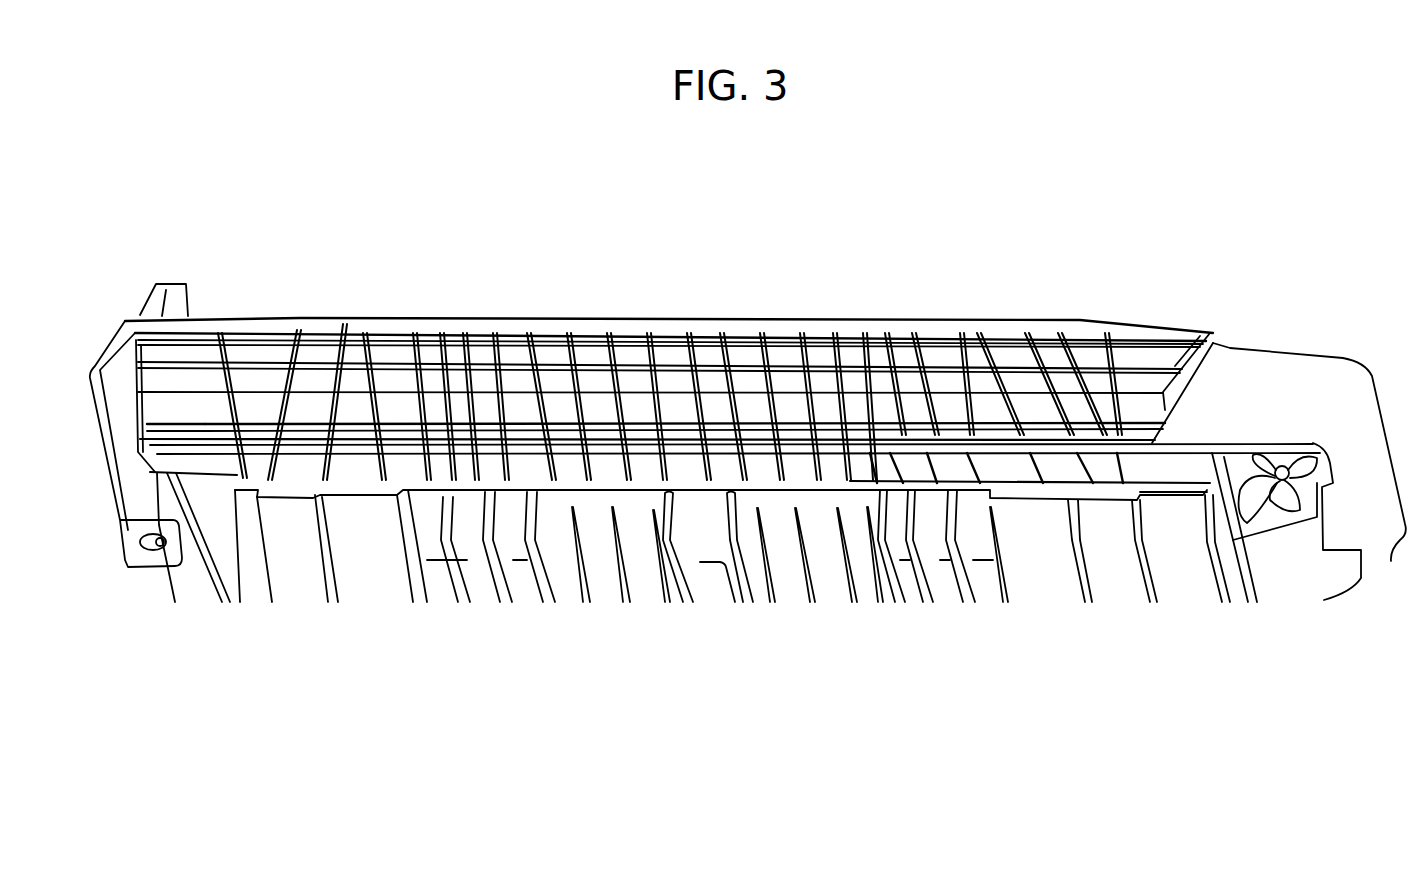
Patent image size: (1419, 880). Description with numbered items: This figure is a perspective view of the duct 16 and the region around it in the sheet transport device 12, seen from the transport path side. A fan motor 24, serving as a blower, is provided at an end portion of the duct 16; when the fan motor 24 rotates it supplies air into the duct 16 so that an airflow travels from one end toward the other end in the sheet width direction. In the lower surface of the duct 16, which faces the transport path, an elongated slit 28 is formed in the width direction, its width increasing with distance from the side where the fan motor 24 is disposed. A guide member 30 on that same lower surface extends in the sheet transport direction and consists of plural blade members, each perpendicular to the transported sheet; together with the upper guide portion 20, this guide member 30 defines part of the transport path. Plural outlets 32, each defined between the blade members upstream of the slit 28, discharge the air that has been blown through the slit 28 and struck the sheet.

The sheet transport device 12 is at (1241, 284).
The duct 16 is at (1331, 358).
The upper guide portion 20 is at (353, 570).
The fan motor 24 is at (1253, 510).
The slit 28 is at (197, 424).
The guide member 30 is at (338, 347).
The outlets 32 is at (588, 353).